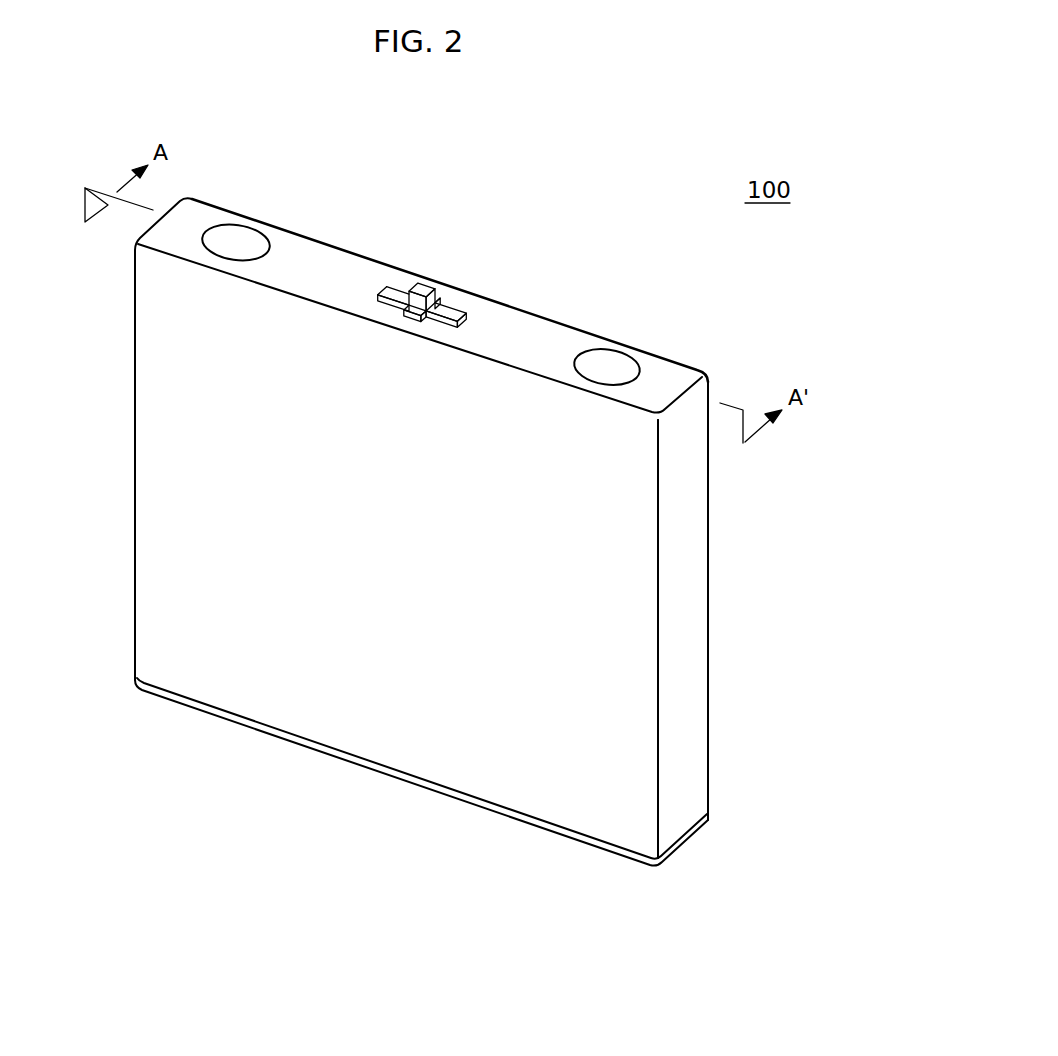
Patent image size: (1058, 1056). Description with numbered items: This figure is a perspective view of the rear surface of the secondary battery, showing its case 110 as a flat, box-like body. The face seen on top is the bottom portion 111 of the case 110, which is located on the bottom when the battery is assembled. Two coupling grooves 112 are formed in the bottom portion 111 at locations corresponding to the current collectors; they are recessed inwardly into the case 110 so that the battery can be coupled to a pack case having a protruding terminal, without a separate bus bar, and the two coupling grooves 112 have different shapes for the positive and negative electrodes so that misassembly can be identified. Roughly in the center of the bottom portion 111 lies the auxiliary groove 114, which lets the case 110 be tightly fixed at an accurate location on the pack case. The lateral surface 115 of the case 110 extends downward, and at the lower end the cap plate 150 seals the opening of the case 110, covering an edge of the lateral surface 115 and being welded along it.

The case 110 is at (607, 313).
The bottom portion 111 is at (520, 323).
The coupling groove 112 is at (243, 242).
The auxiliary groove 114 is at (432, 297).
The lateral surface 115 is at (692, 567).
The cap plate 150 is at (707, 842).